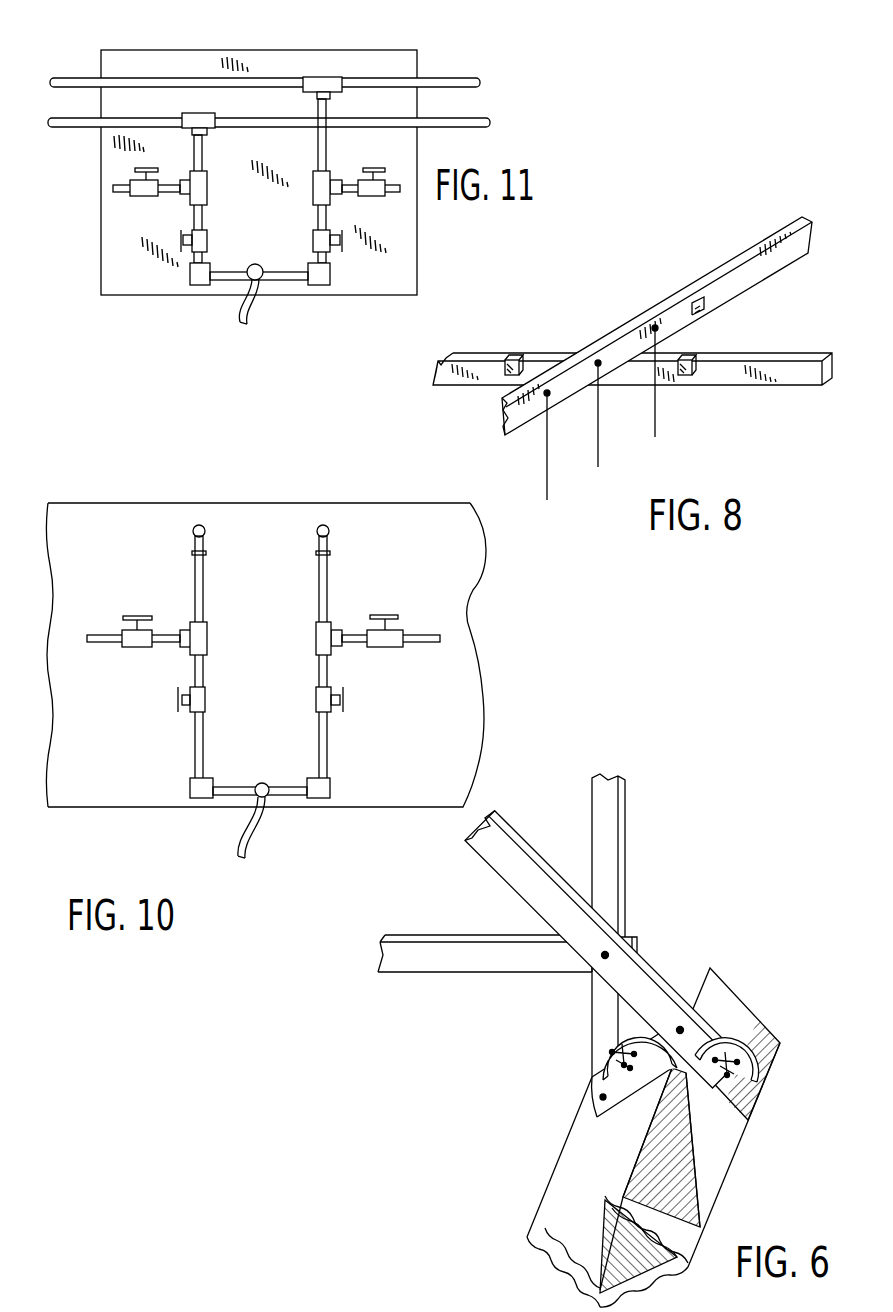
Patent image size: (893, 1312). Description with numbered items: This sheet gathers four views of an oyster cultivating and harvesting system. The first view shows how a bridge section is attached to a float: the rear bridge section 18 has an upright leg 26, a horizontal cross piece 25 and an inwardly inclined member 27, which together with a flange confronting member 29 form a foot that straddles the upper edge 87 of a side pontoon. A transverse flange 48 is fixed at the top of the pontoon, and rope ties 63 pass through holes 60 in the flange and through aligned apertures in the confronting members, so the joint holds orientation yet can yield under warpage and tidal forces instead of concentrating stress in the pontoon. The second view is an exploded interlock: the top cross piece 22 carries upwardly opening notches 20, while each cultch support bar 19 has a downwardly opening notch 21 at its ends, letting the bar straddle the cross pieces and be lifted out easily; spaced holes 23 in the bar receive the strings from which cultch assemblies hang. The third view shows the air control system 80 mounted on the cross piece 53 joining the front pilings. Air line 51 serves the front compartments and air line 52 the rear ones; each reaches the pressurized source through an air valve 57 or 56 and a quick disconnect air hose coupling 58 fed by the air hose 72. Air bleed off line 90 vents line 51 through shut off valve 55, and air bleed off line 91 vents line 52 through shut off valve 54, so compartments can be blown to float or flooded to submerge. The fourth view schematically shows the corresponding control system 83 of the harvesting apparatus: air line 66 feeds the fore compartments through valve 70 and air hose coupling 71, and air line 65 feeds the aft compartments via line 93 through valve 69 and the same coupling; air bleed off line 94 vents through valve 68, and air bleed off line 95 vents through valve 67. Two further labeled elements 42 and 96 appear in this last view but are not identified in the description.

In FIG. 6, the rear bridge section 18 is at (625, 798).
In FIG. 8, the cultch support bar 19 is at (775, 232).
In FIG. 8, the upwardly opening notch 20 is at (517, 358).
In FIG. 8, the downwardly opening notch 21 is at (700, 315).
In FIG. 8, the cross piece 22 is at (760, 353).
In FIG. 8, the hole 23 is at (598, 365).
In FIG. 6, the cross piece 25 is at (503, 972).
In FIG. 6, the upright leg 26 is at (664, 831).
In FIG. 6, the inwardly inclined member 27 is at (498, 870).
In FIG. 6, the flange confronting member 29 is at (592, 1077).
In FIG. 11, the manifold panel 42 is at (177, 50).
In FIG. 6, the flange 48 is at (668, 1065).
In FIG. 10, the air line 51 is at (330, 578).
In FIG. 10, the air line 52 is at (203, 578).
In FIG. 10, the cross piece 53 is at (152, 502).
In FIG. 10, the shut off valve 54 is at (130, 642).
In FIG. 10, the shut off valve 55 is at (397, 627).
In FIG. 10, the air valve 56 is at (205, 712).
In FIG. 10, the air valve 57 is at (331, 687).
In FIG. 10, the quick disconnect air hose coupling 58 is at (266, 794).
In FIG. 6, the hole 60 is at (620, 1100).
In FIG. 6, the rope tie 63 is at (725, 1042).
In FIG. 11, the air line 65 is at (202, 155).
In FIG. 11, the air line 66 is at (328, 155).
In FIG. 11, the valve 67 is at (143, 195).
In FIG. 11, the valve 68 is at (377, 196).
In FIG. 11, the valve 69 is at (208, 240).
In FIG. 11, the valve 70 is at (330, 250).
In FIG. 11, the air hose coupling 71 is at (262, 278).
In FIG. 11, the air hose 72 is at (250, 325).
In FIG. 10, the air hose 72 is at (240, 840).
In FIG. 10, the air control system 80 is at (399, 565).
In FIG. 11, the control system 83 is at (435, 39).
In FIG. 6, the upper edge 87 is at (633, 1177).
In FIG. 10, the air bleed off line 90 is at (433, 642).
In FIG. 10, the air bleed off line 91 is at (102, 632).
In FIG. 11, the line 93 is at (237, 120).
In FIG. 11, the air bleed off line 94 is at (397, 183).
In FIG. 11, the air bleed off line 95 is at (122, 182).
In FIG. 11, the supply pipe 96 is at (243, 79).